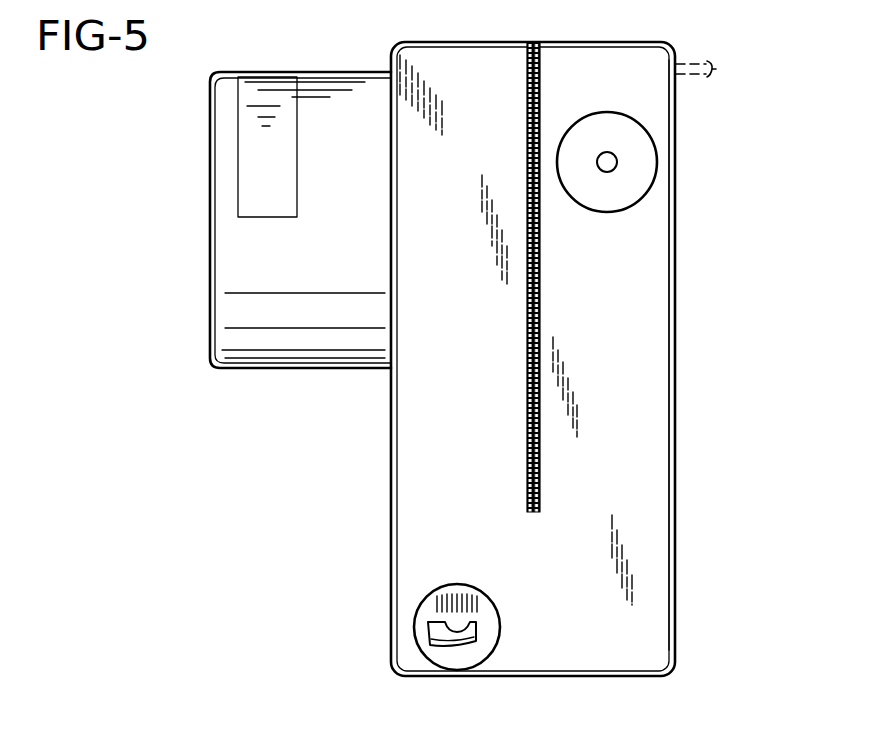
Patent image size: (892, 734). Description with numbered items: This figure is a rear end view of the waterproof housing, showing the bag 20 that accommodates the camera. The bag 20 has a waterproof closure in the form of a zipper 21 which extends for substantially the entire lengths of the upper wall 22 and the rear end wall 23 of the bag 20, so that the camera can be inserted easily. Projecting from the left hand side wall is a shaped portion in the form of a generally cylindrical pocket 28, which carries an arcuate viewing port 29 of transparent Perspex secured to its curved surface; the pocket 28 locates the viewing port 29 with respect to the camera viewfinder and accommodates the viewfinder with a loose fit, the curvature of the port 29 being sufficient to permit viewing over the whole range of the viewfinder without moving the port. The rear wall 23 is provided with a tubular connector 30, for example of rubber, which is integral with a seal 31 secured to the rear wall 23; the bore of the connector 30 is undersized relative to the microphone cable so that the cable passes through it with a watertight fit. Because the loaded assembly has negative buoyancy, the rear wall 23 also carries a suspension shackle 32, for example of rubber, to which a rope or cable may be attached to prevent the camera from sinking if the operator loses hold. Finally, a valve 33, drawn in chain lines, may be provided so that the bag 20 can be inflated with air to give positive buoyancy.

The bag 20 is at (686, 609).
The zipper 21 is at (540, 478).
The upper wall 22 is at (598, 43).
The rear end wall 23 is at (645, 358).
The cylindrical pocket 28 is at (300, 345).
The viewing port 29 is at (270, 92).
The tubular connector 30 is at (617, 164).
The seal 31 is at (642, 143).
The suspension shackle 32 is at (438, 648).
The valve 33 is at (716, 69).